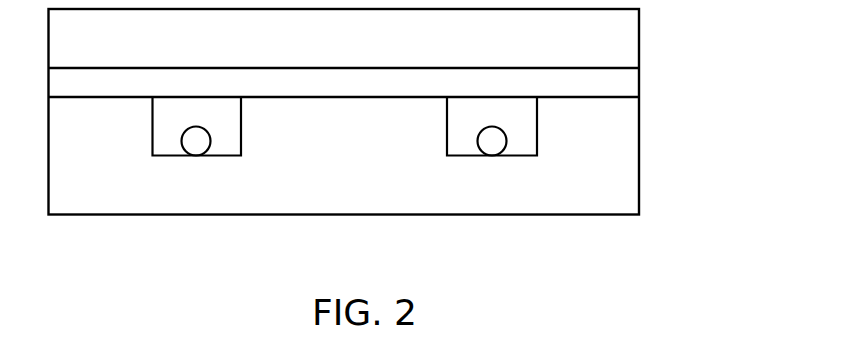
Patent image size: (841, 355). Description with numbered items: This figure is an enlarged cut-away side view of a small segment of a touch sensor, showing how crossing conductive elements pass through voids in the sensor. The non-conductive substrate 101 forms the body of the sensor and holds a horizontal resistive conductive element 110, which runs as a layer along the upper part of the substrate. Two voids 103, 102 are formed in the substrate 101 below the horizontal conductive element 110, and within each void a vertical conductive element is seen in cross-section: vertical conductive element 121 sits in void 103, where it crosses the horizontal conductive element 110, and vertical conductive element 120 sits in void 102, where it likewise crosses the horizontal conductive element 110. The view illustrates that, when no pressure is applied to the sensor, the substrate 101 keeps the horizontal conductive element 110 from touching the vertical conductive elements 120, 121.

The non-conductive substrate 101 is at (609, 158).
The horizontal resistive conductive element 110 is at (631, 88).
The void 103 is at (154, 158).
The void 102 is at (538, 158).
The vertical conductive element 121 is at (192, 140).
The vertical conductive element 120 is at (490, 142).